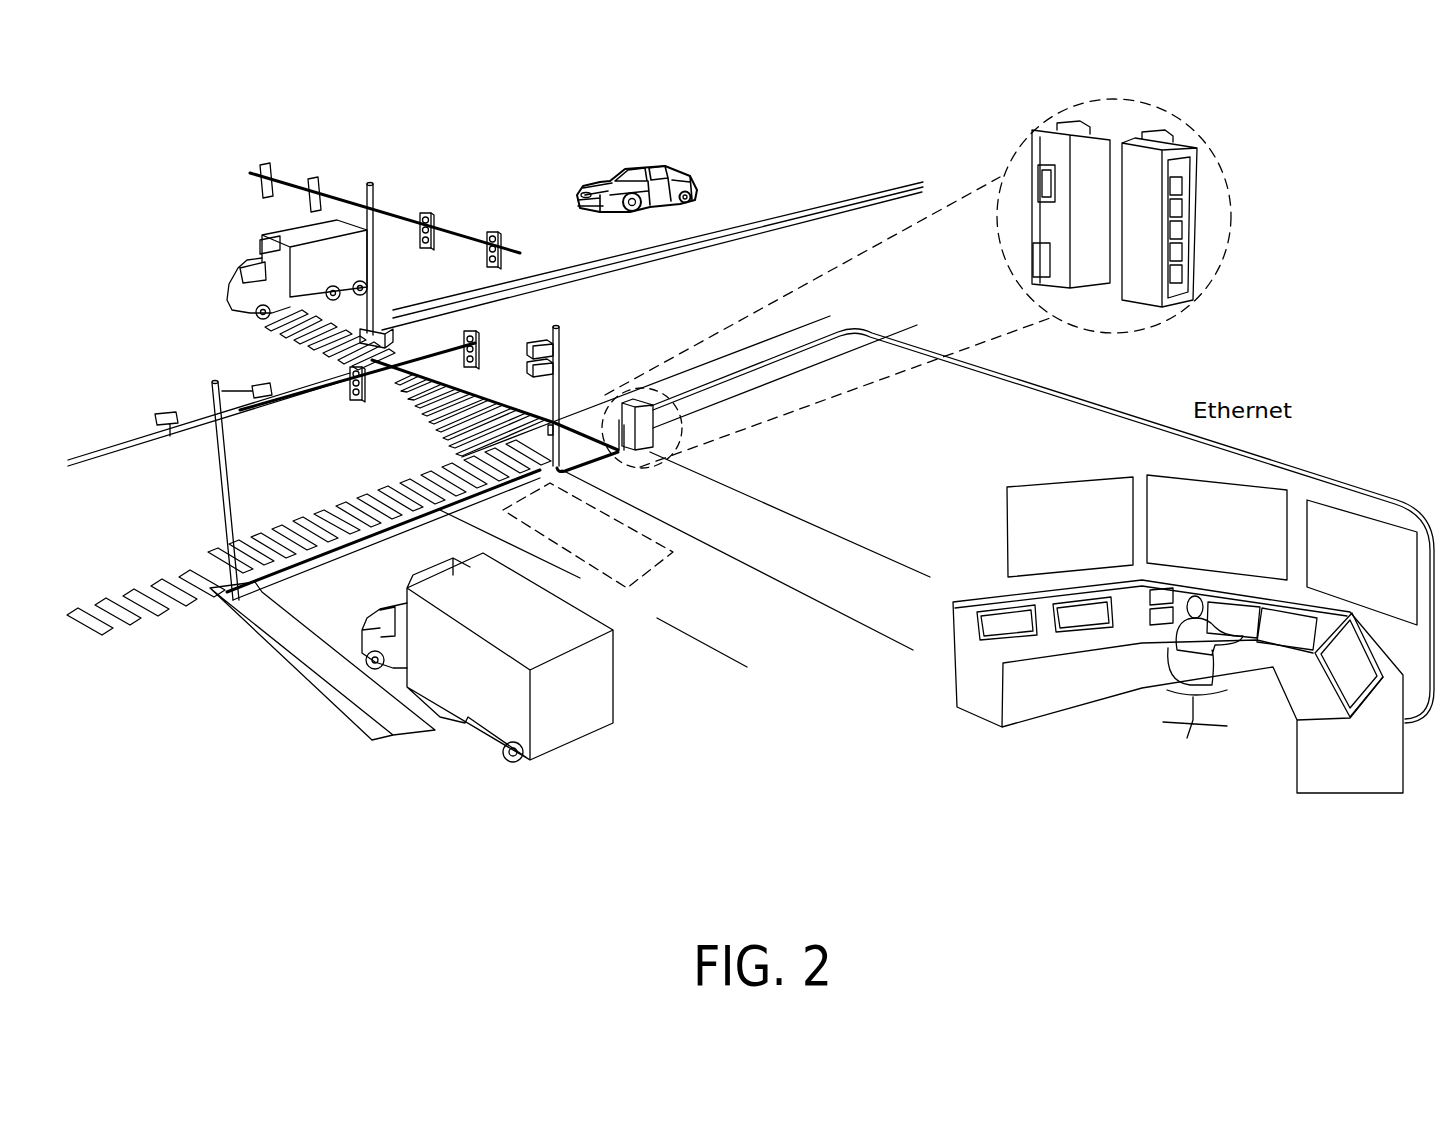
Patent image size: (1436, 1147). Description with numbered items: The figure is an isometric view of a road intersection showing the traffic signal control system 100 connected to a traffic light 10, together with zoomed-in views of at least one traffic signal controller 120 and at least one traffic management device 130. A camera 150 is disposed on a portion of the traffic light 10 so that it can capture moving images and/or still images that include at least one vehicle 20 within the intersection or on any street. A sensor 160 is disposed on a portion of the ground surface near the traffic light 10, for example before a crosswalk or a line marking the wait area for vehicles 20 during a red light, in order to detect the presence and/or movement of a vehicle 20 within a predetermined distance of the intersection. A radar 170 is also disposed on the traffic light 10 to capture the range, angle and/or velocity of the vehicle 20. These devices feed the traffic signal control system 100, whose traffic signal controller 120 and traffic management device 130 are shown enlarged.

The traffic light 10 is at (493, 232).
The vehicle 20 is at (640, 166).
The traffic signal control system 100 is at (1001, 112).
The traffic signal controller 120 is at (1197, 243).
The traffic management device 130 is at (973, 600).
The camera 150 is at (266, 384).
The sensor 160 is at (640, 556).
The radar 170 is at (413, 350).